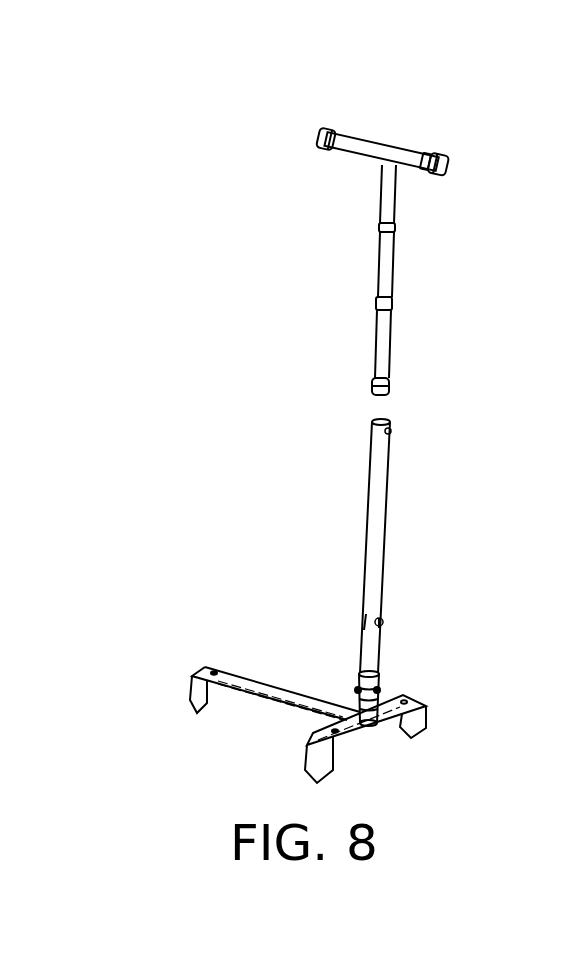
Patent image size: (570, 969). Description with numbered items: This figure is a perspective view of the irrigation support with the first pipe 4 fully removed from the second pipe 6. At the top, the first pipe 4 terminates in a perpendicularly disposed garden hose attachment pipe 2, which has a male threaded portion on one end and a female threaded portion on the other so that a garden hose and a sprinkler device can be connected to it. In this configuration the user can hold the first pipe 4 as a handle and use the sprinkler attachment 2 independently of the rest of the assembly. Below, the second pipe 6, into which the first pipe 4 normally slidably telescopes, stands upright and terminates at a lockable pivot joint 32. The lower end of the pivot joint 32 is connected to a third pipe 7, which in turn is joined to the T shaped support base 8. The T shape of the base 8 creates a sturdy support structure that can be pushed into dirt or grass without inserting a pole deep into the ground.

The garden hose attachment pipe 2 is at (452, 137).
The first pipe 4 is at (400, 273).
The second pipe 6 is at (380, 528).
The pivot joint 32 is at (385, 610).
The third pipe 7 is at (373, 662).
The T shaped support base 8 is at (167, 633).